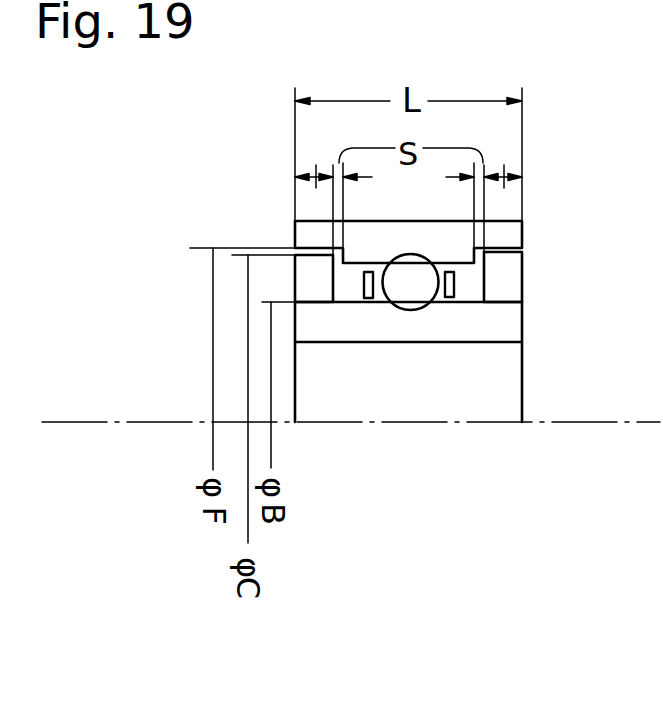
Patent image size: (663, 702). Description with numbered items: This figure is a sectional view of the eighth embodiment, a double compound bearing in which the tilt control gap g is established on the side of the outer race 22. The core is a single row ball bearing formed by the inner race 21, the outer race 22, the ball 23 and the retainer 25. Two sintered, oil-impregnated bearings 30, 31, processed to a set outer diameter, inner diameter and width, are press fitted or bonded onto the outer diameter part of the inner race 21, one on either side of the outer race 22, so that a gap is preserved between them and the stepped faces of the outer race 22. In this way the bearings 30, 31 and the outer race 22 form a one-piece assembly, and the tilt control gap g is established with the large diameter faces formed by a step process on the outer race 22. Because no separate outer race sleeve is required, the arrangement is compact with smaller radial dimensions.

The inner race 21 is at (502, 333).
The outer race 22 is at (505, 232).
The ball 23 is at (412, 295).
The retainer 25 is at (452, 284).
The sintered, oil-impregnated bearing 30 is at (308, 280).
The sintered, oil-impregnated bearing 31 is at (507, 266).
The tilt control gap g is at (233, 252).